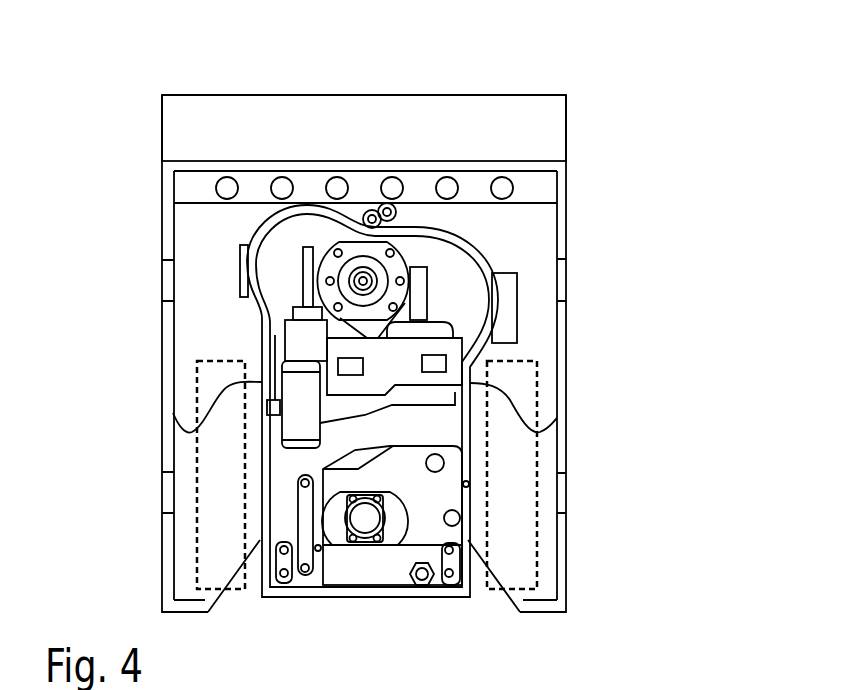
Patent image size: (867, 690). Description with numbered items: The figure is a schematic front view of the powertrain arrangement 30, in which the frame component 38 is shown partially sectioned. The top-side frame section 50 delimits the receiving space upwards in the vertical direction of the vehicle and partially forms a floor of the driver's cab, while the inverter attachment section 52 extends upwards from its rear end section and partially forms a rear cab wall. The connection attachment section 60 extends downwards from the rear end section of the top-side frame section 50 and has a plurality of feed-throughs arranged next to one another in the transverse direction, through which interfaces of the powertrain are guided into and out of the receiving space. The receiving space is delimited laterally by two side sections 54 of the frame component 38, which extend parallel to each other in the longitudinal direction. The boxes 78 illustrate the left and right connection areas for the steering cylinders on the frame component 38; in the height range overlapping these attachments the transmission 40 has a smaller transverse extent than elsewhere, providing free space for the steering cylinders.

The powertrain arrangement 30 is at (692, 109).
The frame component 38 is at (612, 226).
The transmission 40 is at (413, 590).
The top-side frame section 50 is at (568, 156).
The inverter attachment section 52 is at (541, 121).
The side sections 54 is at (566, 320).
The connection attachment section 60 is at (541, 190).
The box 78 is at (537, 398).